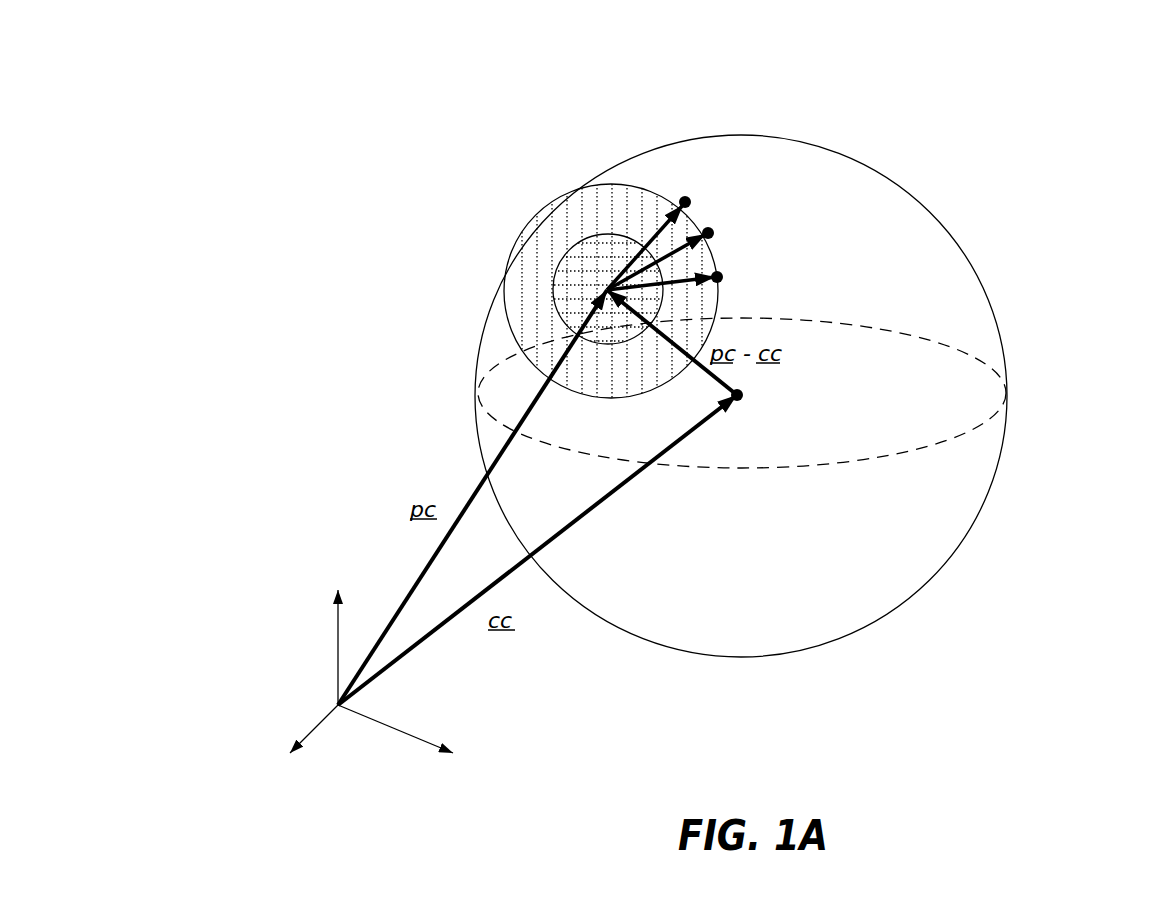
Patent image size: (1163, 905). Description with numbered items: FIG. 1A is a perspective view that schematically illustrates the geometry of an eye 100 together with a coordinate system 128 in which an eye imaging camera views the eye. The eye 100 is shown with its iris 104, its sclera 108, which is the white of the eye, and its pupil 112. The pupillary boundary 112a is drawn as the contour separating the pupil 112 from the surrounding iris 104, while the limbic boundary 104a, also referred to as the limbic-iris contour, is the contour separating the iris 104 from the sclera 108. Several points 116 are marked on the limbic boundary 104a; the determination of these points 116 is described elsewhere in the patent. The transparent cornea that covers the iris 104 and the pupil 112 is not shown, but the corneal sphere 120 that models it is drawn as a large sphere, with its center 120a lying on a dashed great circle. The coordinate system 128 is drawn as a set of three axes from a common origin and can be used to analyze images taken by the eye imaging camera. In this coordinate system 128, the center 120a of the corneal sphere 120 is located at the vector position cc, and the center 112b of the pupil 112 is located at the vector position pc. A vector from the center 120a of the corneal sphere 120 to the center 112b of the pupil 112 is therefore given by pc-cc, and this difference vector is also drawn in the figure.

The eye 100 is at (334, 148).
The iris 104 is at (582, 232).
The limbic boundary 104a is at (505, 298).
The sclera 108 is at (500, 343).
The pupil 112 is at (598, 253).
The pupillary boundary 112a is at (545, 210).
The center of the pupil 112b is at (575, 302).
The points on the limbic boundary 116 is at (717, 277).
The corneal sphere 120 is at (952, 233).
The center of the corneal sphere 120a is at (745, 395).
The coordinate system 128 is at (337, 652).